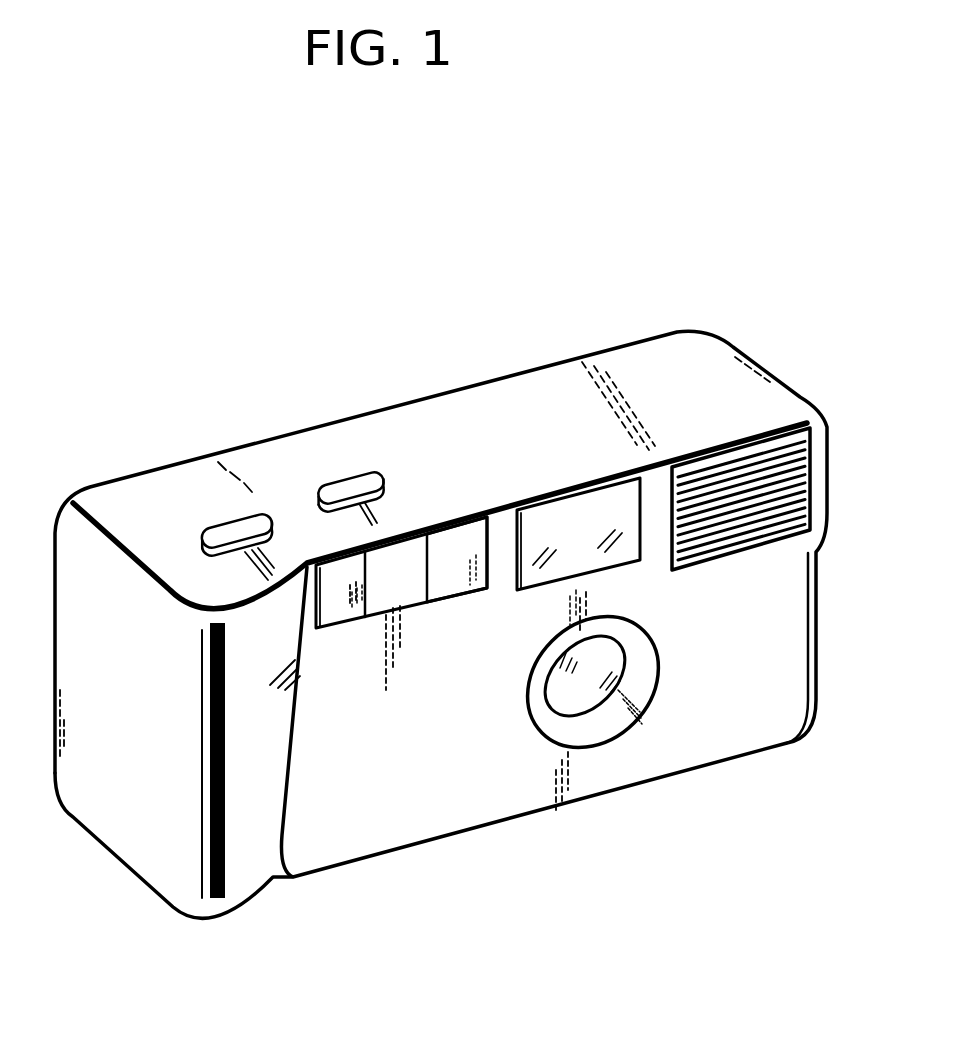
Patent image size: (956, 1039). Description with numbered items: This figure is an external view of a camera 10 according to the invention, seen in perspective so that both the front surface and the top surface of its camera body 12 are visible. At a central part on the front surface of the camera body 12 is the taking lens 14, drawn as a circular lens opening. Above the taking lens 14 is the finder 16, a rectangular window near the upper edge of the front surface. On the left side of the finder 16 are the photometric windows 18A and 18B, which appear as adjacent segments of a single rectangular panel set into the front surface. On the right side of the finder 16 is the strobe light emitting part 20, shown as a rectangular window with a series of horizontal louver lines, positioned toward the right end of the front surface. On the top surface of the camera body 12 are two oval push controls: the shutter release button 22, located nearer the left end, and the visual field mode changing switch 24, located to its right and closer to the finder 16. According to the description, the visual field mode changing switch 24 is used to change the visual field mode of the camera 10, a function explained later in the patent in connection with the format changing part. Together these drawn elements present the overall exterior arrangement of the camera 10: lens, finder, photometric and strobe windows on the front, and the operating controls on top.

The camera 10 is at (462, 334).
The camera body 12 is at (448, 812).
The taking lens 14 is at (578, 703).
The finder 16 is at (575, 512).
The photometric window 18A is at (340, 613).
The photometric window 18B is at (457, 580).
The strobe light emitting part 20 is at (723, 540).
The shutter release button 22 is at (225, 530).
The visual field mode changing switch 24 is at (343, 488).